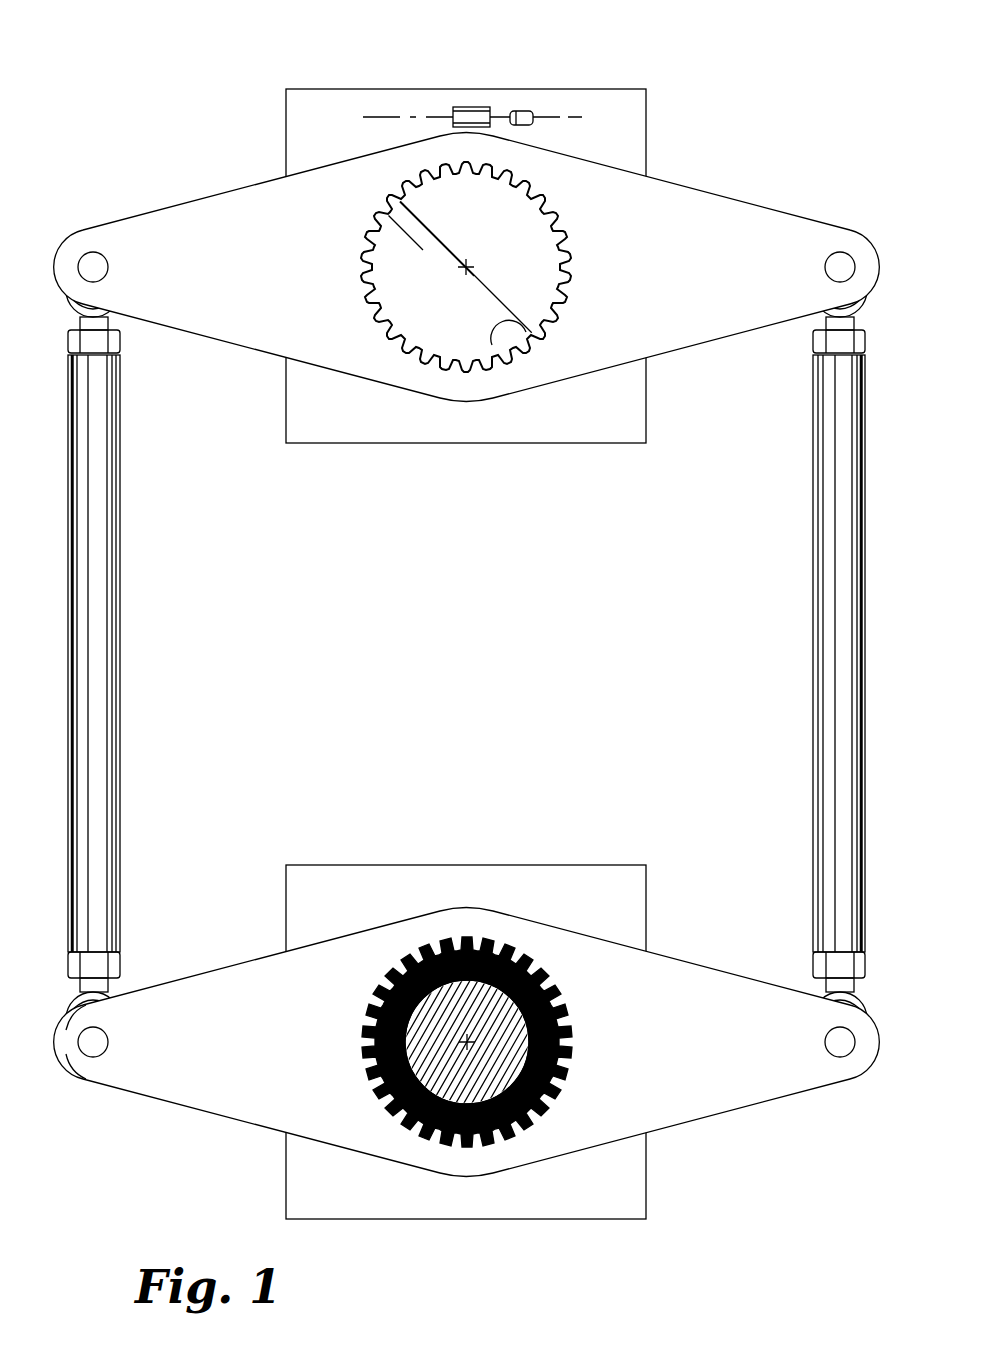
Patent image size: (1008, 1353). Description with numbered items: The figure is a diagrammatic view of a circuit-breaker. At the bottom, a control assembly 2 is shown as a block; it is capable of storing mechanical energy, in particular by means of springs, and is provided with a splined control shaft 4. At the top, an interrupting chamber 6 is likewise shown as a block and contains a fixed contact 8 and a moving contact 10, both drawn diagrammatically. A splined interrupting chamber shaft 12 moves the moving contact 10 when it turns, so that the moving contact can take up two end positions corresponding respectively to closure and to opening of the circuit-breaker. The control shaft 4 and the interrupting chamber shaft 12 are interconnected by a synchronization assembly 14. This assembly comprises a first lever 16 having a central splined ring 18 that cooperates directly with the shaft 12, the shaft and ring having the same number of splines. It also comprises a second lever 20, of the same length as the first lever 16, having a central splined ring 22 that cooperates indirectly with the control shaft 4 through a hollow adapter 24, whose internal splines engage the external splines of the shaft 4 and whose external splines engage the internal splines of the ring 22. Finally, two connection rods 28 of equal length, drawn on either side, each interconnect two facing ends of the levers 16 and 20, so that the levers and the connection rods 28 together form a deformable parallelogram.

The control assembly 2 is at (632, 1168).
The splined control shaft 4 is at (427, 1053).
The interrupting chamber 6 is at (582, 89).
The fixed contact 8 is at (485, 107).
The moving contact 10 is at (527, 110).
The splined interrupting chamber shaft 12 is at (491, 235).
The synchronization assembly 14 is at (53, 1097).
The first lever 16 is at (700, 208).
The central splined ring 18 is at (528, 335).
The second lever 20 is at (228, 998).
The central splined ring 22 is at (508, 1042).
The adapter 24 is at (557, 1070).
The connection rods 28 is at (108, 690).